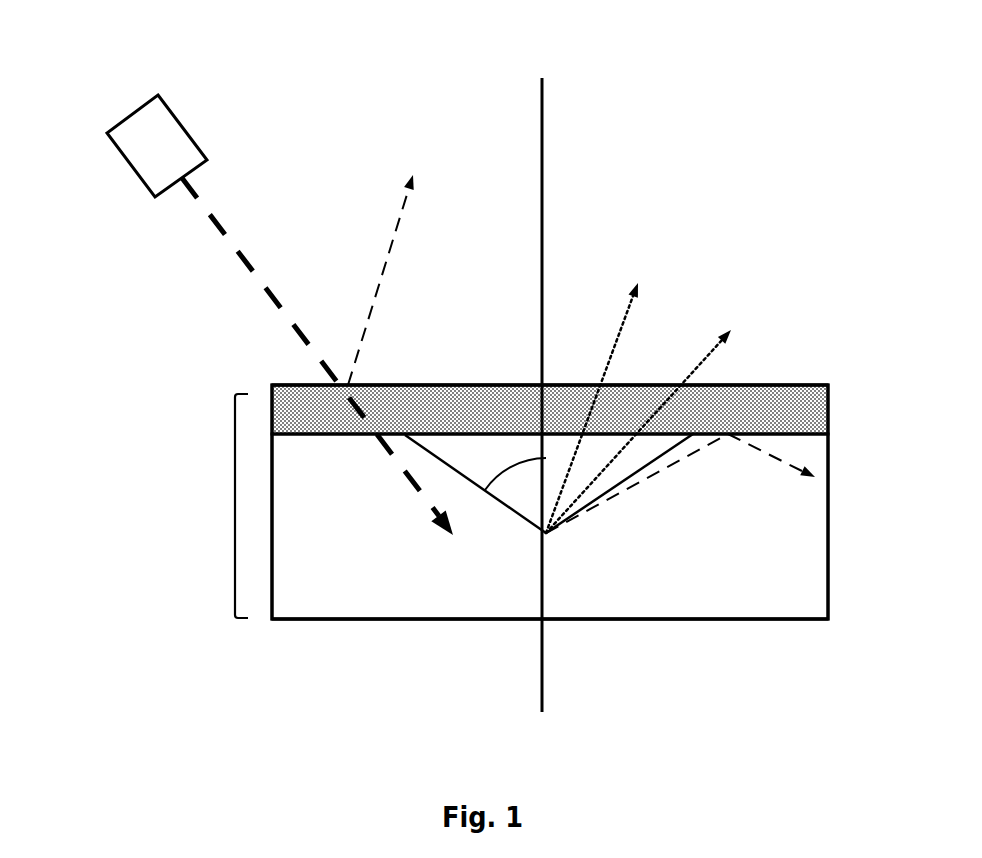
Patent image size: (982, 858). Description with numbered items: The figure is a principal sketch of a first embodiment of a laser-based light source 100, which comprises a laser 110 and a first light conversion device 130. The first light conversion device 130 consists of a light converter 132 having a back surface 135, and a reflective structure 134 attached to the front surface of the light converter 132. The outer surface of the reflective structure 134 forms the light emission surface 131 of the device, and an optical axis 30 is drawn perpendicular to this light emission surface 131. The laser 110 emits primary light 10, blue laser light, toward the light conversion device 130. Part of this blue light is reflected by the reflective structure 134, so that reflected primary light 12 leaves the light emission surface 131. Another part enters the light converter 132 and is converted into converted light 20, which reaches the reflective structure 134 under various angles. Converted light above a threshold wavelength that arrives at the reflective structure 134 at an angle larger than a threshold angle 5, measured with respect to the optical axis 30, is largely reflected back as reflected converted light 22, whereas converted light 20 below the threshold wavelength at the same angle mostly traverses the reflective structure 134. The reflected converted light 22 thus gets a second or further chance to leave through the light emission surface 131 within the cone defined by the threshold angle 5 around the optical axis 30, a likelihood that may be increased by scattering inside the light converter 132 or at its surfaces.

The laser-based light source 100 is at (91, 71).
The laser 110 is at (116, 151).
The primary light 10 is at (248, 268).
The reflected primary light 12 is at (398, 232).
The optical axis 30 is at (545, 98).
The converted light 20 is at (630, 318).
The reflected converted light 22 is at (665, 468).
The threshold angle 5 is at (515, 488).
The first light conversion device 130 is at (235, 507).
The light emission surface 131 is at (788, 385).
The reflective structure 134 is at (829, 415).
The light converter 132 is at (829, 482).
The back surface 135 is at (715, 622).